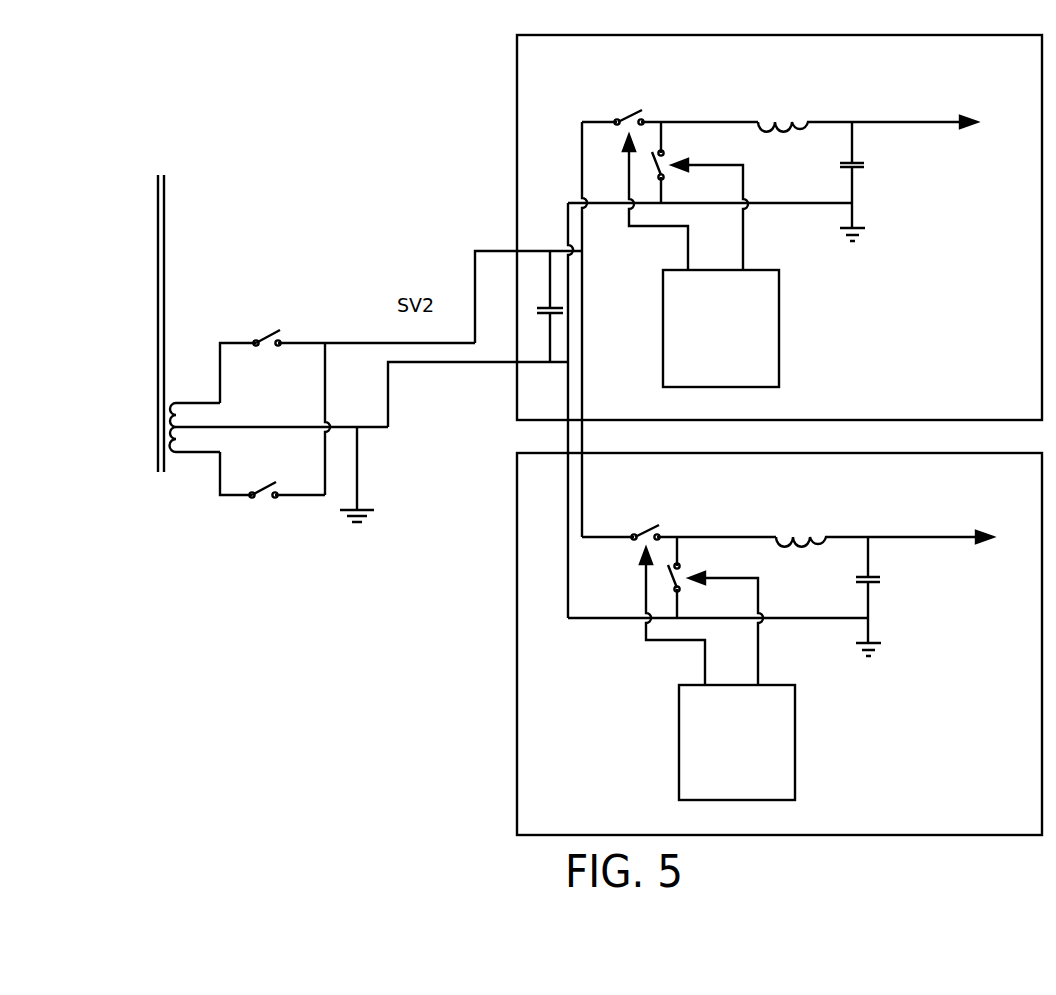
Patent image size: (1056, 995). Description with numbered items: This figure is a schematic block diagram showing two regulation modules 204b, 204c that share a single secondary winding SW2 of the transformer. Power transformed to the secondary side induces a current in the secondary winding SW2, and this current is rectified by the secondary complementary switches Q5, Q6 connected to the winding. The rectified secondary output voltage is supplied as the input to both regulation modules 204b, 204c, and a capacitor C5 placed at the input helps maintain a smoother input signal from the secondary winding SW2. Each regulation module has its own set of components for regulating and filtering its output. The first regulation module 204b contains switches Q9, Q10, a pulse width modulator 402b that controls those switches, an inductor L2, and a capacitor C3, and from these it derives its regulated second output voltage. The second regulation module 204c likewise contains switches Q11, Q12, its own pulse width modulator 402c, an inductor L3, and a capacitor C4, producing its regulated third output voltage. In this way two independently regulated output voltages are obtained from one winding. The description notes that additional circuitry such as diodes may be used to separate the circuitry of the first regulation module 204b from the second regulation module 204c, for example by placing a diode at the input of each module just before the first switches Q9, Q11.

The regulation module 204b is at (756, 90).
The regulation module 204c is at (756, 503).
The pulse width modulator 402b is at (698, 378).
The pulse width modulator 402c is at (714, 793).
The secondary winding SW2 is at (273, 323).
The secondary complementary switch Q5 is at (347, 366).
The secondary complementary switch Q6 is at (272, 475).
The capacitor C5 is at (541, 306).
The switch Q9 is at (670, 107).
The switch Q10 is at (684, 162).
The inductor L2 is at (860, 139).
The capacitor C3 is at (866, 181).
The switch Q11 is at (679, 521).
The switch Q12 is at (700, 577).
The inductor L3 is at (877, 548).
The capacitor C4 is at (882, 596).